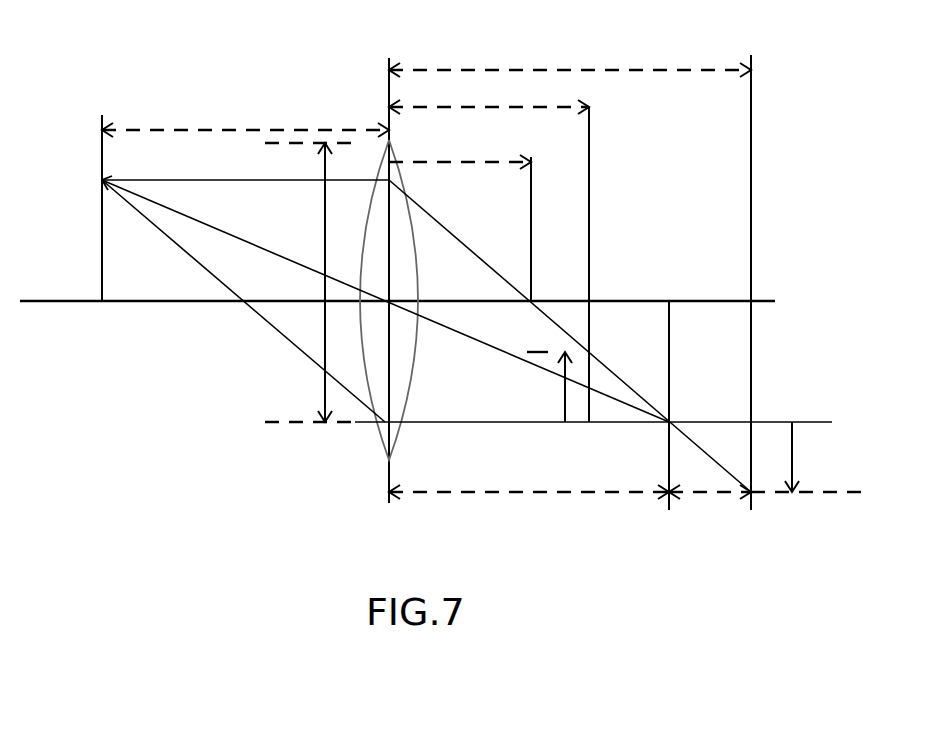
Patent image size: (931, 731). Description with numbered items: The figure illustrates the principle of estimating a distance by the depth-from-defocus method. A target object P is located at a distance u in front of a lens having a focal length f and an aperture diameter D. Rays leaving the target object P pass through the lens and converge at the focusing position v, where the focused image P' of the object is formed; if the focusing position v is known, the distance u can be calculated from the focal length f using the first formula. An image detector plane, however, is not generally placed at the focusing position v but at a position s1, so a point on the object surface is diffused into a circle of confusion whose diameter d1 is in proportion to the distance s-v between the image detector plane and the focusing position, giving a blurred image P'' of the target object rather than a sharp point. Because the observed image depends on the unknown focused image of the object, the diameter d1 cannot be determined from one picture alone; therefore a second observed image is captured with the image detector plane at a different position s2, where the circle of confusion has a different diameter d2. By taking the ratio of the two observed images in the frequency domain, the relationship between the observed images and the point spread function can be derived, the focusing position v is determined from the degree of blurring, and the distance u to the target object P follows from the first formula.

The target object P is at (359, 295).
The focused image of the target object P' is at (593, 405).
The image of the target object on the image detector plane P'' is at (806, 273).
The distance to the target object u is at (245, 120).
The focusing position v is at (529, 484).
The focal length of the lens f is at (460, 219).
The lens aperture diameter D is at (308, 282).
The diameter of the circle of confusion d1 is at (542, 387).
The diameter of the circle of confusion at the second image detector plane position d2 is at (820, 457).
The image detector plane position s1 is at (570, 60).
The different image detector plane position s2 is at (489, 253).
The distance between the image detector plane and the focusing position s-v is at (710, 506).